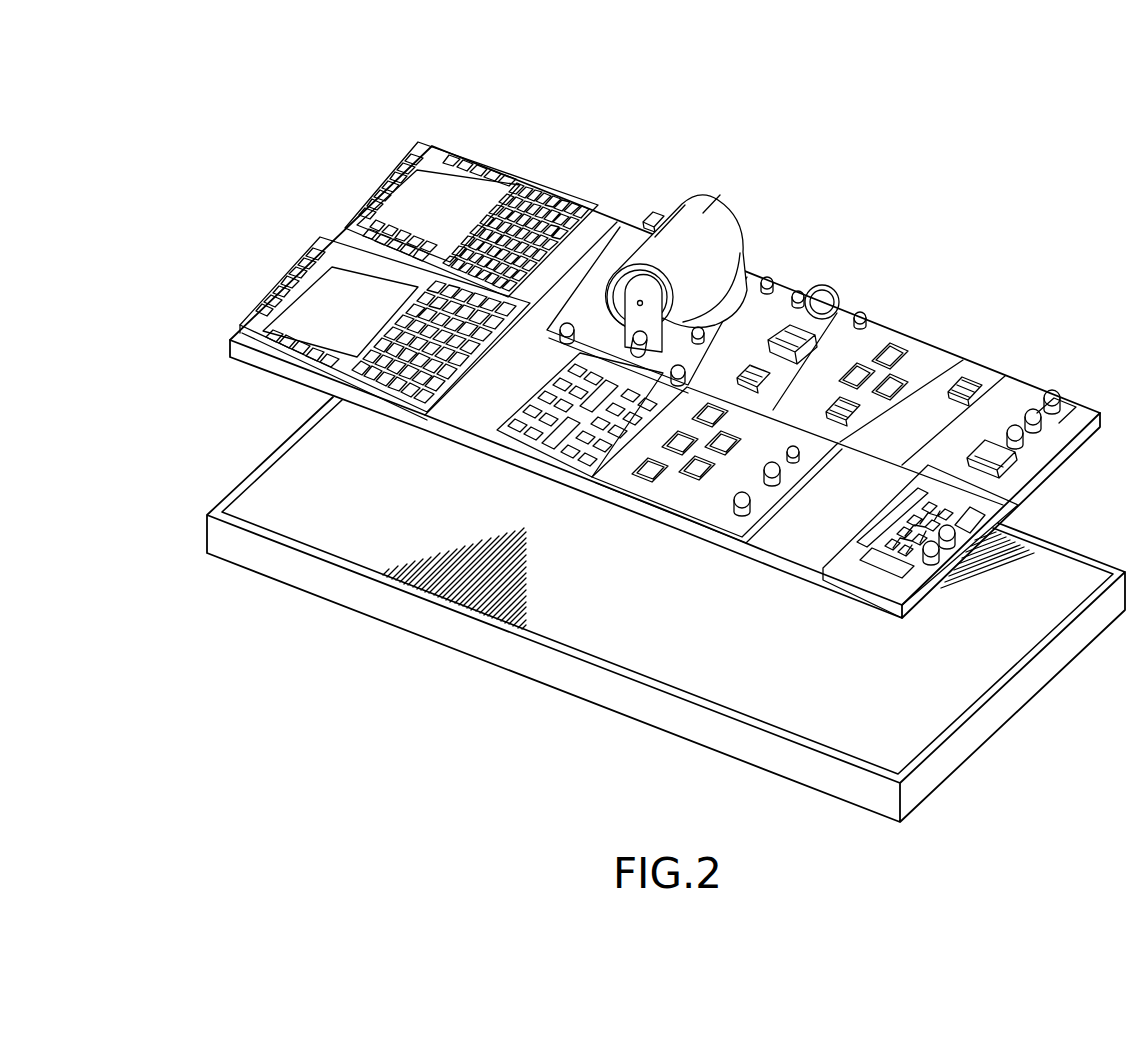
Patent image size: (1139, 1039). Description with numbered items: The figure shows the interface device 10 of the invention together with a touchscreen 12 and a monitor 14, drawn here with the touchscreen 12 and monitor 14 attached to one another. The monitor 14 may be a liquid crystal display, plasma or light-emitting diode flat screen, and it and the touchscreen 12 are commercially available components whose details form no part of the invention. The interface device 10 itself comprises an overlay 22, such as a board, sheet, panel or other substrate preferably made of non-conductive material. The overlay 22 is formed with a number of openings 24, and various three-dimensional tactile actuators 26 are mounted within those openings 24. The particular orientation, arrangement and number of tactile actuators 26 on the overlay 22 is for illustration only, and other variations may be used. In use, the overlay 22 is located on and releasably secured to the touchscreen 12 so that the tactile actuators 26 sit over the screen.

The interface device 10 is at (845, 198).
The touchscreen 12 is at (287, 505).
The monitor 14 is at (300, 594).
The overlay 22 is at (230, 349).
The openings 24 is at (853, 372).
The tactile actuators 26 is at (790, 343).